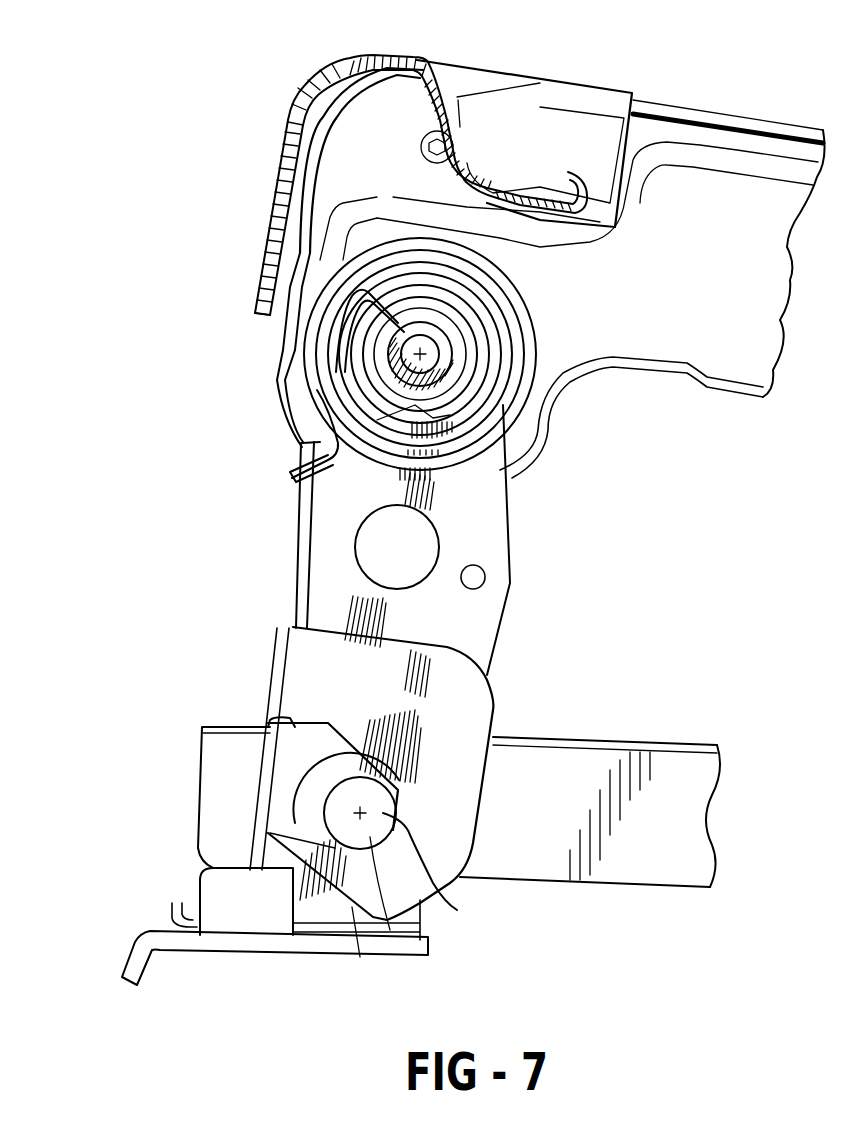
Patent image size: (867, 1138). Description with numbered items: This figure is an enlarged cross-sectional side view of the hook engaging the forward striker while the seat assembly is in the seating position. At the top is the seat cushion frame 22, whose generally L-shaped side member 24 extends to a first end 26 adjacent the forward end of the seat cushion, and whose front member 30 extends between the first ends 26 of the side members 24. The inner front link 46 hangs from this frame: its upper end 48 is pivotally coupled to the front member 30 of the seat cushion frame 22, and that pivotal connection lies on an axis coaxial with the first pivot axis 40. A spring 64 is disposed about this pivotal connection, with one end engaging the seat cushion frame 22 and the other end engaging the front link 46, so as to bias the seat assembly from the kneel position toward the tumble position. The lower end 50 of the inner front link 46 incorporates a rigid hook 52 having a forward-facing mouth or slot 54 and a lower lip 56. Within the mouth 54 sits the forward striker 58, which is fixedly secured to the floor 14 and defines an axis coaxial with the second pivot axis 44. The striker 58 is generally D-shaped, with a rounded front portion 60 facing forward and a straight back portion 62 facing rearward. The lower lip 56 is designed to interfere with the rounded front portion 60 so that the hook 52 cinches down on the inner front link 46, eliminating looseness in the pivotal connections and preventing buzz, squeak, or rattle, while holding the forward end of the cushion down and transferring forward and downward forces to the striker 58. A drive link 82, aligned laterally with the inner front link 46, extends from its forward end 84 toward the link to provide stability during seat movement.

The floor 14 is at (140, 950).
The seat cushion frame 22 is at (688, 107).
The side member 24 is at (778, 273).
The first end 26 is at (555, 355).
The front member 30 is at (383, 57).
The first pivot axis 40 is at (417, 355).
The second pivot axis 44 is at (360, 812).
The inner front link 46 is at (325, 548).
The upper end 48 is at (487, 455).
The lower end 50 is at (290, 813).
The hook 52 is at (470, 712).
The mouth 54 is at (268, 722).
The lower lip 56 is at (352, 907).
The forward striker 58 is at (390, 930).
The rounded front portion 60 is at (323, 840).
The straight back portion 62 is at (440, 900).
The spring 64 is at (523, 315).
The drive link 82 is at (698, 755).
The forward end 84 is at (215, 750).